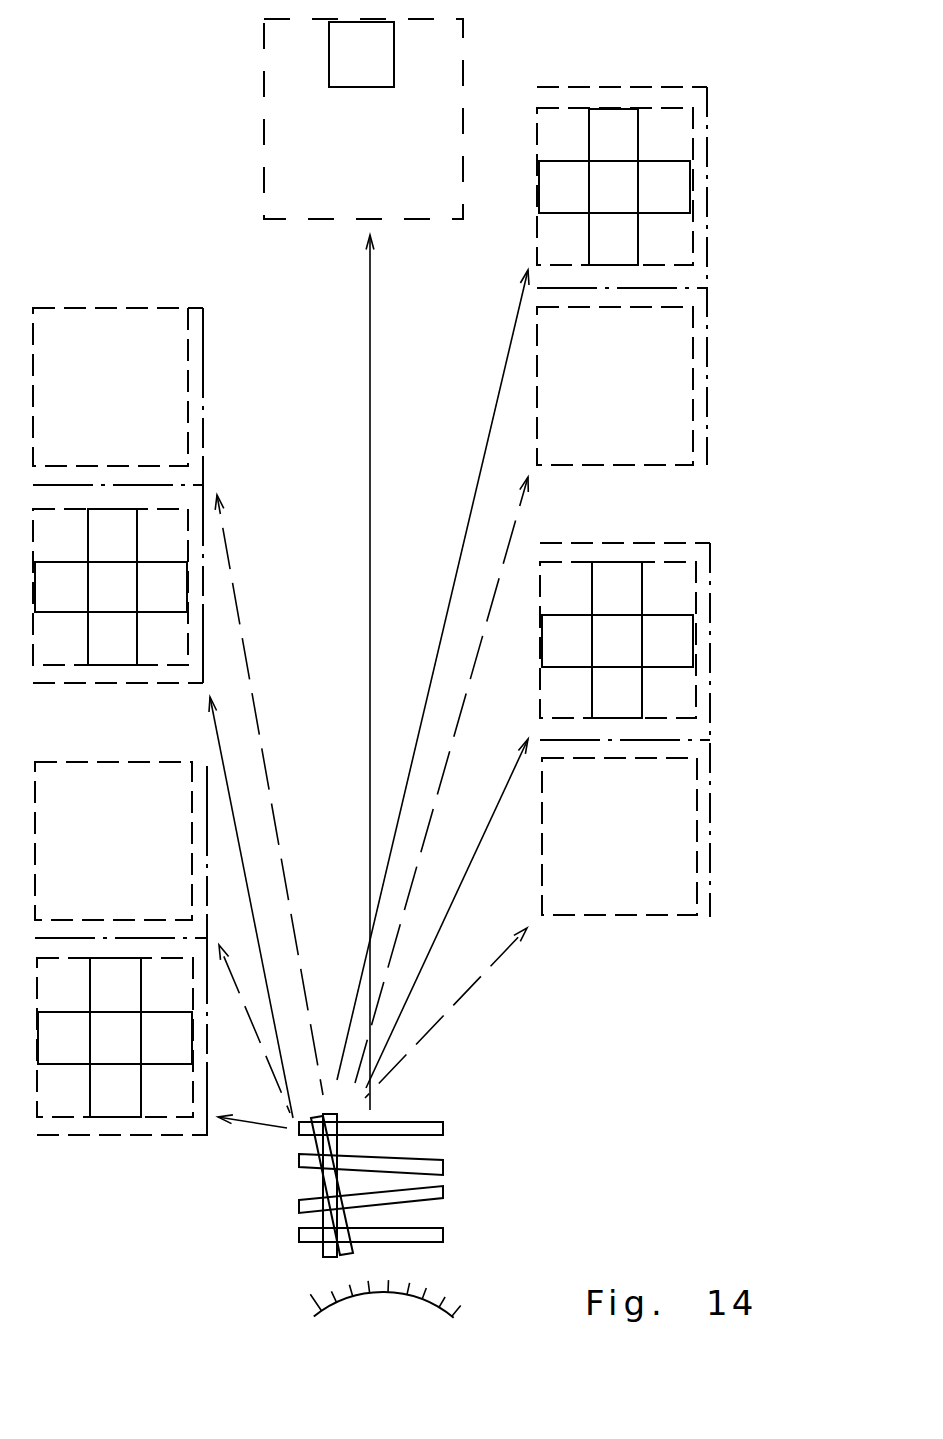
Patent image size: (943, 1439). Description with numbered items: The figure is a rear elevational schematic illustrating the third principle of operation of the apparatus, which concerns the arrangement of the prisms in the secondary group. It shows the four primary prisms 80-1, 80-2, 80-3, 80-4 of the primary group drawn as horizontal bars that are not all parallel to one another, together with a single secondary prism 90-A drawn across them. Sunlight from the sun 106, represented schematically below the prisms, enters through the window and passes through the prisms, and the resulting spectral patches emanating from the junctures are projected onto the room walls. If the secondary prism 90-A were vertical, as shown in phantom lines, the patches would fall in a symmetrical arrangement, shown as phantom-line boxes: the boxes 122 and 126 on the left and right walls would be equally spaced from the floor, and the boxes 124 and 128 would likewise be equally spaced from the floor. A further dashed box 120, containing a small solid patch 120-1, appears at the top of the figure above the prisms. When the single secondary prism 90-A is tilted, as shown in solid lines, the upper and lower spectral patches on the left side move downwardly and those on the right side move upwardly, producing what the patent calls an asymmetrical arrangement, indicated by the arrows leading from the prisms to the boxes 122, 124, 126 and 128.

The spectral patch box 120 is at (469, 68).
The spectral patch 120-1 is at (352, 40).
The spectral patch box 122 is at (203, 400).
The spectral patch box 124 is at (207, 766).
The spectral patch box 126 is at (708, 322).
The spectral patch box 128 is at (712, 772).
The primary prism 80-1 is at (443, 1128).
The primary prism 80-2 is at (443, 1161).
The primary prism 80-3 is at (443, 1194).
The primary prism 80-4 is at (443, 1234).
The secondary prism 90-A is at (323, 1225).
The sun 106 is at (312, 1310).